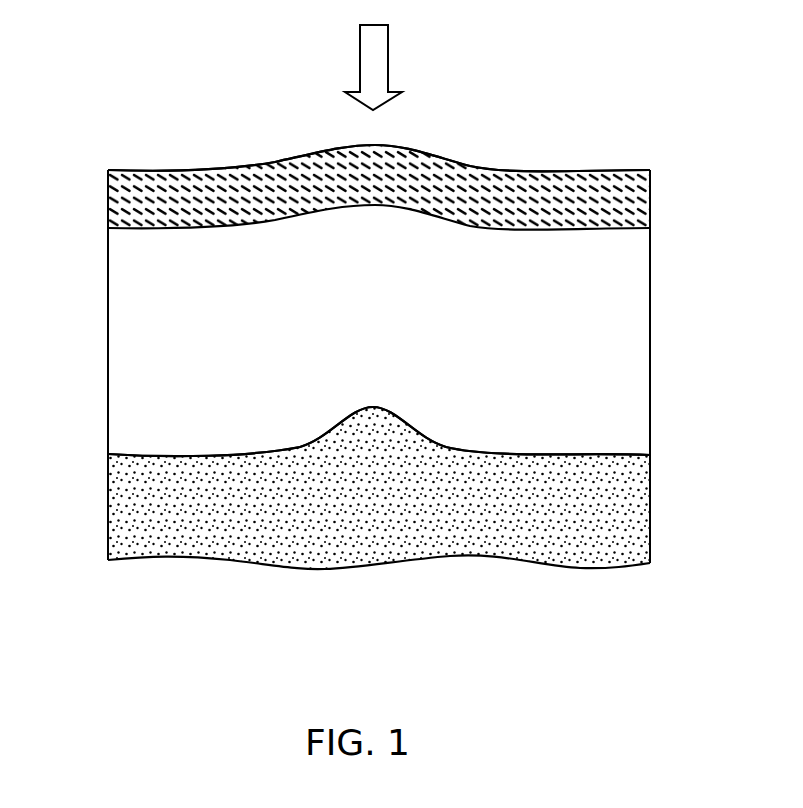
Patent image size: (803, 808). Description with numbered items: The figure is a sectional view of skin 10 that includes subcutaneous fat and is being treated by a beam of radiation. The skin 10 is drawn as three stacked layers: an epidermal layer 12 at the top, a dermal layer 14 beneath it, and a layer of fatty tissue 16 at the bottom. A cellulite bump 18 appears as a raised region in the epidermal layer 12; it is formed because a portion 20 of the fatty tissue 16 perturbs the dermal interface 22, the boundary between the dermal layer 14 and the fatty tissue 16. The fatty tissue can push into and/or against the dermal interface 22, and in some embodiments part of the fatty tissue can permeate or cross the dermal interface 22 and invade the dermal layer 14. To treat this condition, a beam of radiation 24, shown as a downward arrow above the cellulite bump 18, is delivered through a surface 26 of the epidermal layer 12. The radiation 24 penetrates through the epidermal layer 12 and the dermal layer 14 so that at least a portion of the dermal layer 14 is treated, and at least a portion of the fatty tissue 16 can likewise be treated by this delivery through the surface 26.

The skin 10 is at (120, 40).
The epidermal layer 12 is at (598, 204).
The dermal layer 14 is at (600, 311).
The fatty tissue 16 is at (178, 517).
The cellulite bump 18 is at (336, 140).
The portion of the fatty tissue 20 is at (343, 401).
The dermal interface 22 is at (92, 452).
The beam of radiation 24 is at (388, 36).
The surface of the epidermal layer 26 is at (565, 170).